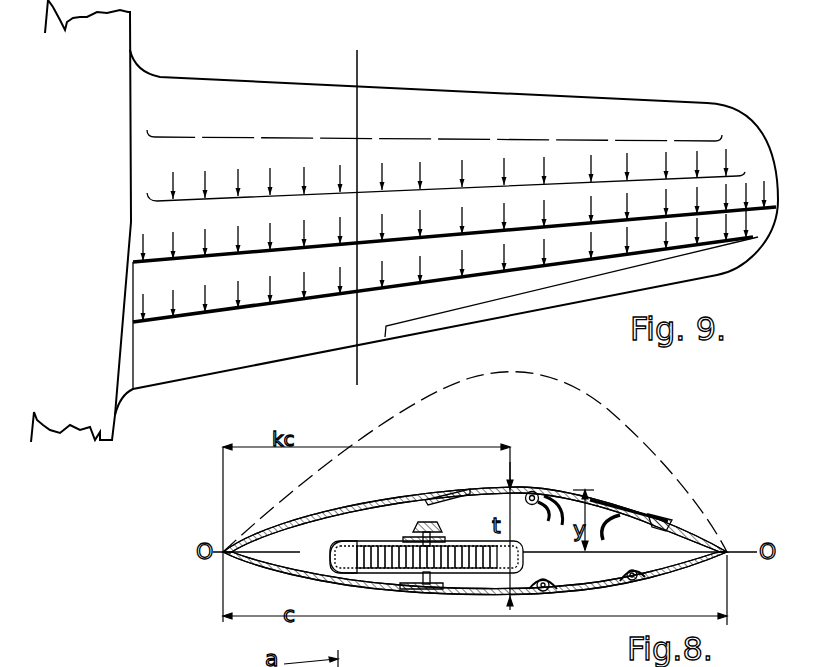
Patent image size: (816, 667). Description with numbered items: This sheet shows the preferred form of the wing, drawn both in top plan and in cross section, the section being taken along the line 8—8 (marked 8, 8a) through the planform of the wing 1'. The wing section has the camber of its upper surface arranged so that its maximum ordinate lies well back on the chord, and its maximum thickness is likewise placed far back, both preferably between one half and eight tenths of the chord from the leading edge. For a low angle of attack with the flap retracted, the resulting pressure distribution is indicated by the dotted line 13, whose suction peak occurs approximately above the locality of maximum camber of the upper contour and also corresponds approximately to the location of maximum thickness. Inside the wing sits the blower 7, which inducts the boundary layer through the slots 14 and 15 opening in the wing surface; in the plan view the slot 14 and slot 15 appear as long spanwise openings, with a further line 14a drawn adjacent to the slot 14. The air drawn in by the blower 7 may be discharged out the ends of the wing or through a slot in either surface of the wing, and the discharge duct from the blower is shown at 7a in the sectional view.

In FIG. 9, the wing 1' is at (446, 232).
In FIG. 8, the blower 7 is at (413, 550).
In FIG. 8, the discharge duct 7a is at (346, 558).
In FIG. 9, the section line 8 is at (347, 218).
In FIG. 9, the section line 8a is at (374, 218).
In FIG. 8, the pressure distribution curve 13 is at (650, 442).
In FIG. 9, the slot 14 is at (577, 184).
In FIG. 8, the slot 14 is at (462, 518).
In FIG. 9, the skin joint line 14a is at (580, 139).
In FIG. 9, the slot 15 is at (582, 262).
In FIG. 8, the slot 15 is at (652, 540).